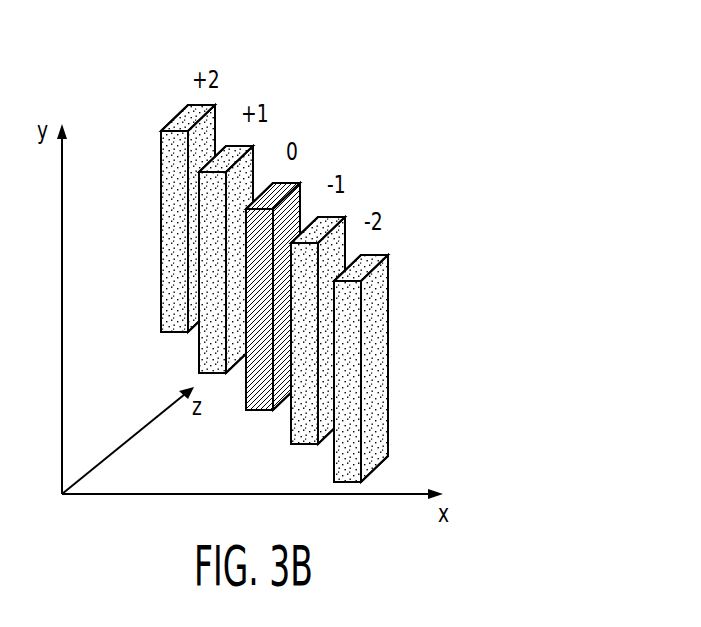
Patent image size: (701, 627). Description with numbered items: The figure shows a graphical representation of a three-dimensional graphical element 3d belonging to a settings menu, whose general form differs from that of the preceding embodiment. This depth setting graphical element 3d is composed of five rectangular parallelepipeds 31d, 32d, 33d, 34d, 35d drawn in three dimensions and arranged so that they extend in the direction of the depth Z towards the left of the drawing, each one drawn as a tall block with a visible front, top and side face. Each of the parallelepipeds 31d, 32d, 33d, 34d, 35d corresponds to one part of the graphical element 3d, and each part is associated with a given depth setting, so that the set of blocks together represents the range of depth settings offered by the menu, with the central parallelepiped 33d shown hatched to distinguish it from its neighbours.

The graphical element 3d is at (405, 121).
The rectangular parallelepiped 31d is at (390, 265).
The rectangular parallelepiped 32d is at (337, 218).
The rectangular parallelepiped 33d is at (292, 184).
The rectangular parallelepiped 34d is at (244, 145).
The rectangular parallelepiped 35d is at (179, 127).